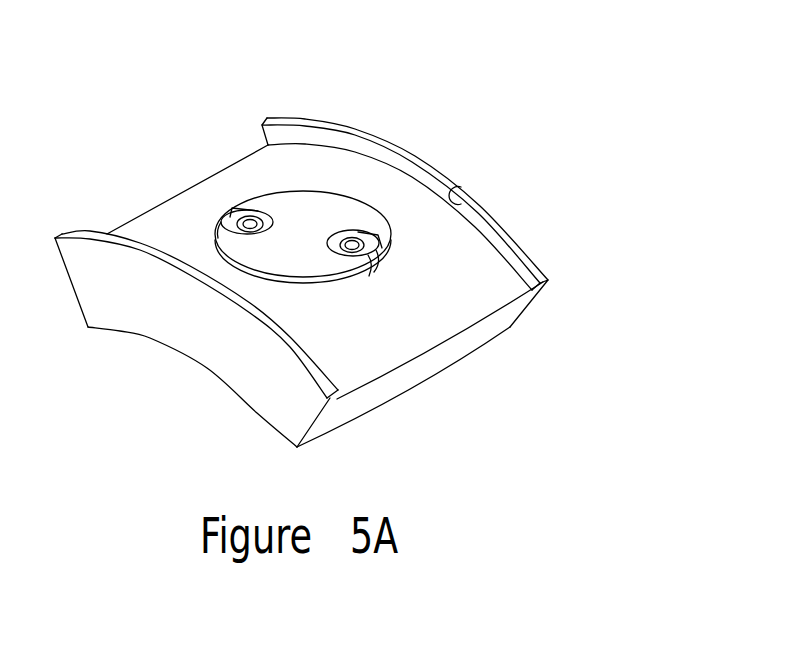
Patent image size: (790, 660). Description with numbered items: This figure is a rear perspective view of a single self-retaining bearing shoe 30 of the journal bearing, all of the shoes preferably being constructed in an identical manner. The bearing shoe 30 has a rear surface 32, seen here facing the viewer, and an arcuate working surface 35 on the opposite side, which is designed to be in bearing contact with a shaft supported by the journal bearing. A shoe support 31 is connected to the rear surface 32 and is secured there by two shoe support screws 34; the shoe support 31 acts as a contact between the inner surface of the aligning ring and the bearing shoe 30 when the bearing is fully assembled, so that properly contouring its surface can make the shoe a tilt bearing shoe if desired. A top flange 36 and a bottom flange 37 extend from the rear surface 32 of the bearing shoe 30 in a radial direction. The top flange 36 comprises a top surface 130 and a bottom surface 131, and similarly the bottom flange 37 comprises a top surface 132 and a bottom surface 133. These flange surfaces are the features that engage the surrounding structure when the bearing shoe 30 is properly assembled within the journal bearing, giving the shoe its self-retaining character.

The bearing shoe 30 is at (573, 137).
The shoe support 31 is at (338, 190).
The rear surface 32 is at (412, 348).
The shoe support screws 34 is at (238, 210).
The arcuate working surface 35 is at (403, 393).
The top flange 36 is at (296, 116).
The bottom flange 37 is at (137, 248).
The top surface 130 is at (451, 190).
The bottom surface 131 is at (548, 281).
The top surface 132 is at (338, 398).
The bottom surface 133 is at (316, 390).